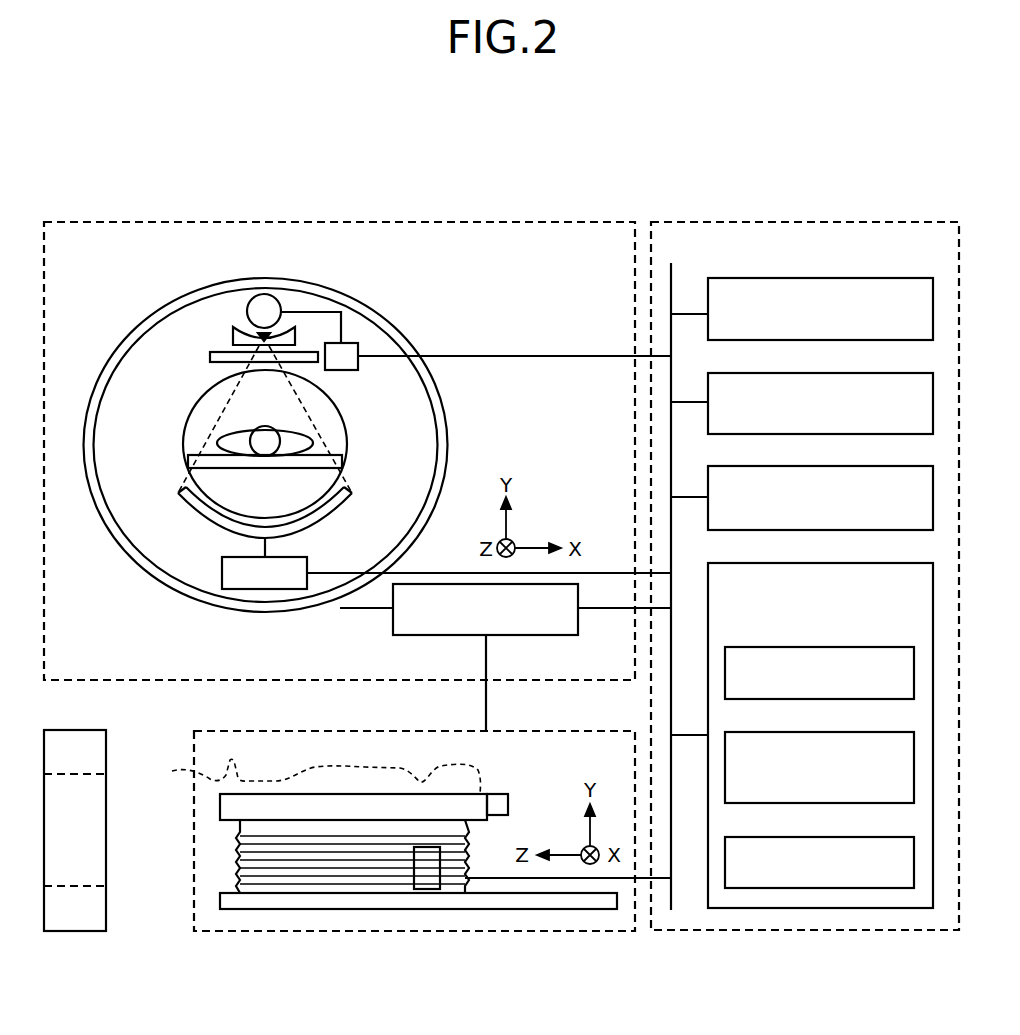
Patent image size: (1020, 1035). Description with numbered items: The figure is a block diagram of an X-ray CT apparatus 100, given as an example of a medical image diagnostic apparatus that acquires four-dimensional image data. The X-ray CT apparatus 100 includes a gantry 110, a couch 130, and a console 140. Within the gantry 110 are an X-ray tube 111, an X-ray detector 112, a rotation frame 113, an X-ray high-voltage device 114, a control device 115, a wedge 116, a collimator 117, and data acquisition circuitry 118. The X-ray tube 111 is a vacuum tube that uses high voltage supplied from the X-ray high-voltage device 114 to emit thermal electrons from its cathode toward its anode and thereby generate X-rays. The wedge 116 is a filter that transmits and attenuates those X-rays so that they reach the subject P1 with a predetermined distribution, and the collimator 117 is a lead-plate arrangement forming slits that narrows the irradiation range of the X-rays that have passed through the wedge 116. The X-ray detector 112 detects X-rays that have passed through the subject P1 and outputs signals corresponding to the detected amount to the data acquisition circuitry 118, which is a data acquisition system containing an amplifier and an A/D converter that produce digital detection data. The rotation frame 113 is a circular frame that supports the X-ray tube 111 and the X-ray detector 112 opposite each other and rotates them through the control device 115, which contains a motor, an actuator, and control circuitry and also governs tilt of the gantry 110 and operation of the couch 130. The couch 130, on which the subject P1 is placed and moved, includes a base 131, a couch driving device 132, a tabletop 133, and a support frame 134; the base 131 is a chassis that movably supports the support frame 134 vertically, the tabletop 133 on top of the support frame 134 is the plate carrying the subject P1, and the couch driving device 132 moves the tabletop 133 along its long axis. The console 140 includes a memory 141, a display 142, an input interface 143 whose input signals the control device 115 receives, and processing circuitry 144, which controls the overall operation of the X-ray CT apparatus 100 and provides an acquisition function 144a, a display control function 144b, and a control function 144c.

The X-ray CT apparatus 100 is at (628, 143).
The gantry 110 is at (529, 222).
The X-ray tube 111 is at (264, 294).
The X-ray detector 112 is at (193, 507).
The rotation frame 113 is at (391, 322).
The X-ray high-voltage device 114 is at (345, 370).
The control device 115 is at (513, 635).
The wedge 116 is at (233, 337).
The collimator 117 is at (210, 357).
The data acquisition circuitry 118 is at (267, 590).
The couch 130 is at (525, 731).
The base 131 is at (240, 863).
The couch driving device 132 is at (450, 889).
The tabletop 133 is at (188, 462).
The support frame 134 is at (220, 814).
The console 140 is at (892, 221).
The memory 141 is at (862, 278).
The display 142 is at (862, 373).
The input interface 143 is at (862, 466).
The processing circuitry 144 is at (857, 563).
The acquisition function 144a is at (838, 647).
The display control function 144b is at (838, 732).
The control function 144c is at (838, 837).
The subject P1 is at (265, 426).